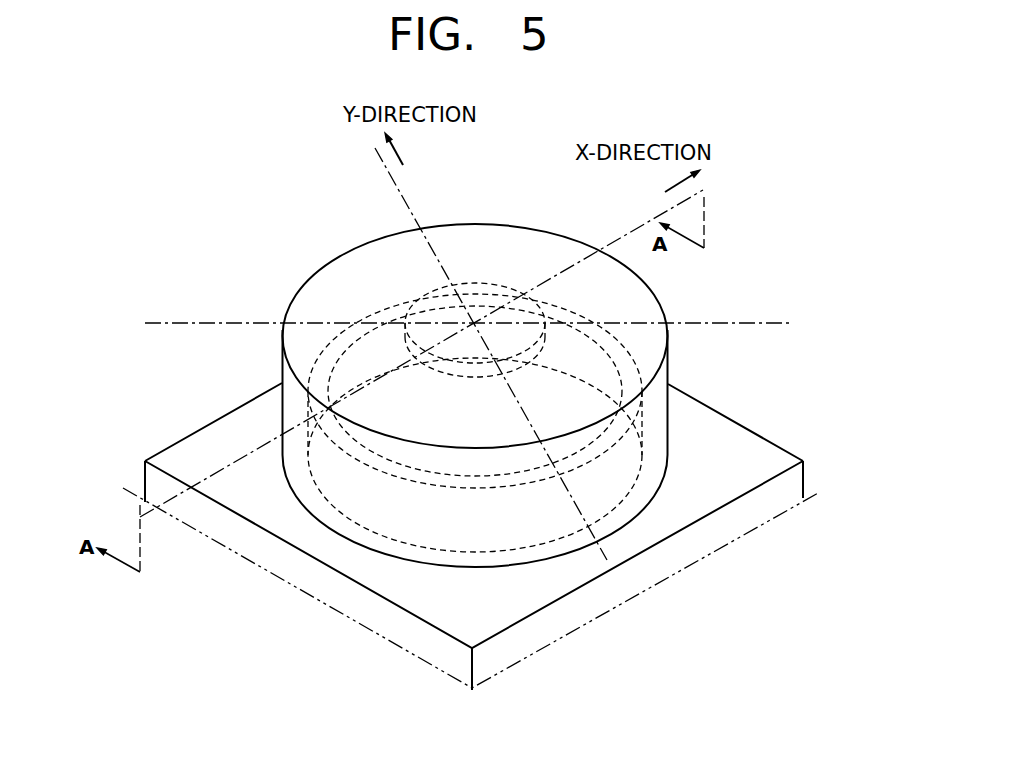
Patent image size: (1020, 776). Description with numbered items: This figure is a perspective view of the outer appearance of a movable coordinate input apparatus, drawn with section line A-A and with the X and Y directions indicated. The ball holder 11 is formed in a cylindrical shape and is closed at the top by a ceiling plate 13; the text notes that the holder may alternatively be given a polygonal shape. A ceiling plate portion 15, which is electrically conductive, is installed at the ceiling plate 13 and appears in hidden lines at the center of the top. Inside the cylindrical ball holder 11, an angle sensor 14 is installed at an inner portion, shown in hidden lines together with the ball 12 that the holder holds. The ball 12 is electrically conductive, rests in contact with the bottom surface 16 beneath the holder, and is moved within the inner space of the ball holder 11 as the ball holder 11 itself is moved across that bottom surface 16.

The ball holder 11 is at (338, 257).
The ball 12 is at (337, 352).
The ceiling plate 13 is at (502, 232).
The angle sensor 14 is at (613, 502).
The ceiling plate portion 15 is at (403, 307).
The bottom surface 16 is at (750, 435).